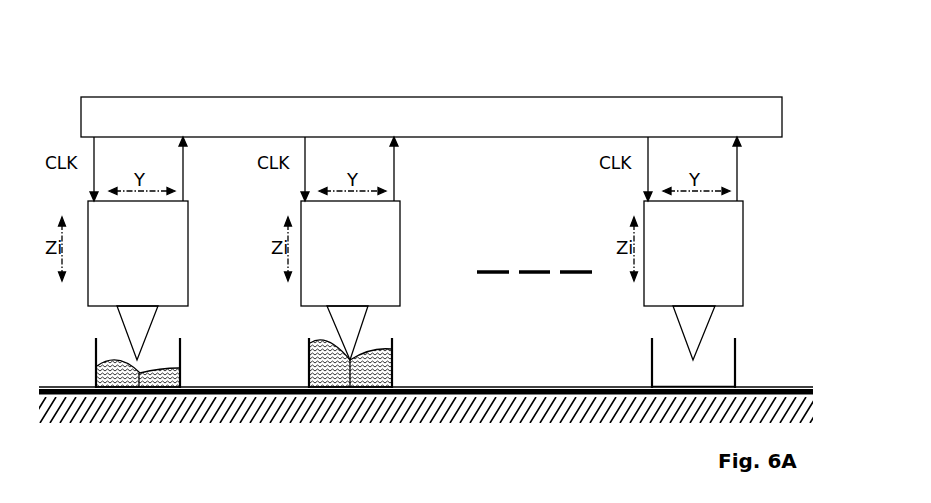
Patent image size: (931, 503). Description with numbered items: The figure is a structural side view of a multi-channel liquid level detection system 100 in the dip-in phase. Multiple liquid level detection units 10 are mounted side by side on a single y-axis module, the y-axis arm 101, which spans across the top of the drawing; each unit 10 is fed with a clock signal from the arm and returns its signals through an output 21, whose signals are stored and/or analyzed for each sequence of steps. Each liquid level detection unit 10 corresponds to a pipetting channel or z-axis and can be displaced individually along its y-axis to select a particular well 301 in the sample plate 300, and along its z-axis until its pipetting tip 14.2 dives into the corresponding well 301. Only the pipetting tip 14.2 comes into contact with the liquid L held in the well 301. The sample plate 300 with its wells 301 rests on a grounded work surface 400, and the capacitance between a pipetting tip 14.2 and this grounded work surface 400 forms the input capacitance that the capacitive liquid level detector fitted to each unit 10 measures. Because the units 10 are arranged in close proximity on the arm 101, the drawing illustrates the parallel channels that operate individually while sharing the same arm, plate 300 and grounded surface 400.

The multi-channel liquid level detection system 100 is at (786, 40).
The y-axis arm 101 is at (117, 117).
The output 21 is at (473, 169).
The liquid level detection unit 10 is at (150, 262).
The pipetting tip 14.2 is at (156, 313).
The liquid L is at (143, 372).
The well 301 is at (96, 364).
The sample plate 300 is at (525, 387).
The grounded work surface 400 is at (240, 418).